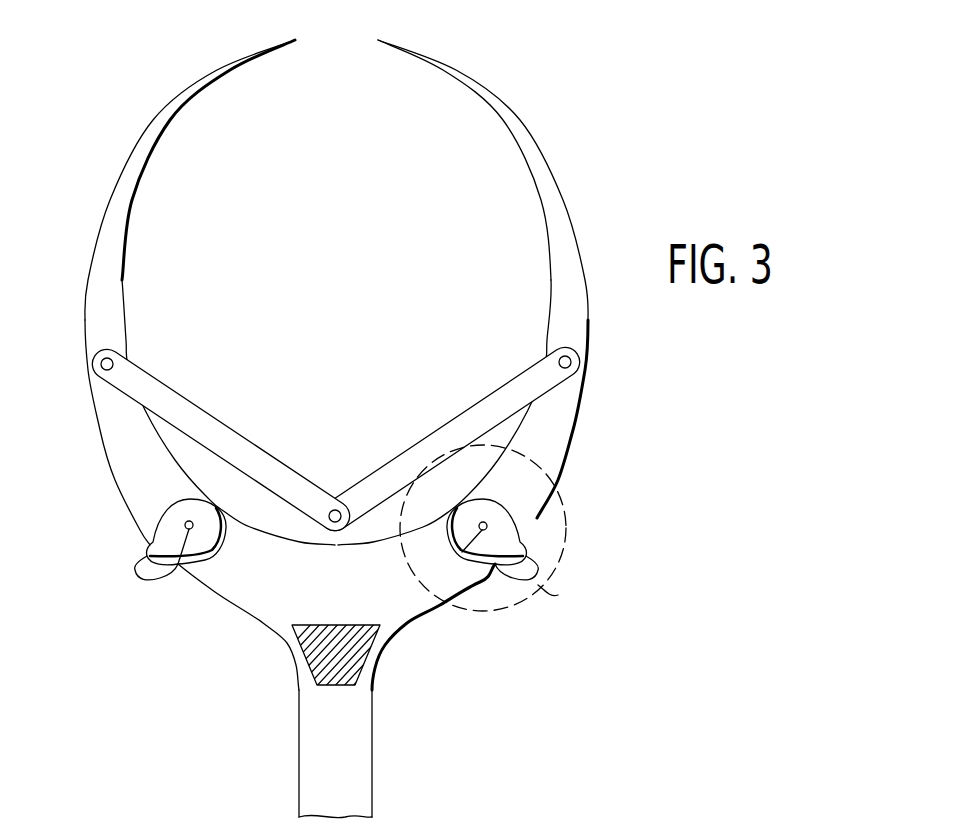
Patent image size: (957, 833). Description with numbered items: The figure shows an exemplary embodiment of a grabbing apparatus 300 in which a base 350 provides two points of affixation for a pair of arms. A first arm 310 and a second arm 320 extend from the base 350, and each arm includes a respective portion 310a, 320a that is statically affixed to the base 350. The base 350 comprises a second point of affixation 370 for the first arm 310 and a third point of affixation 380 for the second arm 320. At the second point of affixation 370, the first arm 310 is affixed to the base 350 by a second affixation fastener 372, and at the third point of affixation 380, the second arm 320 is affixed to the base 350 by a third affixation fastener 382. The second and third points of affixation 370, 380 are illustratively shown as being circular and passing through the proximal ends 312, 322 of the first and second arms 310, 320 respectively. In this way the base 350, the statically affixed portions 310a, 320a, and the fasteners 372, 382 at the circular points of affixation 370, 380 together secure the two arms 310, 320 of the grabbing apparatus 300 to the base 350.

The grabbing apparatus 300 is at (565, 43).
The first arm 310 is at (158, 118).
The proximal end 312 is at (125, 432).
The second arm 320 is at (533, 138).
The proximal end 322 is at (542, 422).
The second point of affixation 370 is at (168, 540).
The second affixation fastener 372 is at (182, 565).
The third point of affixation 380 is at (498, 527).
The third affixation fastener 382 is at (462, 552).
The portion 310a is at (277, 588).
The portion 320a is at (390, 593).
The base 350 is at (317, 763).